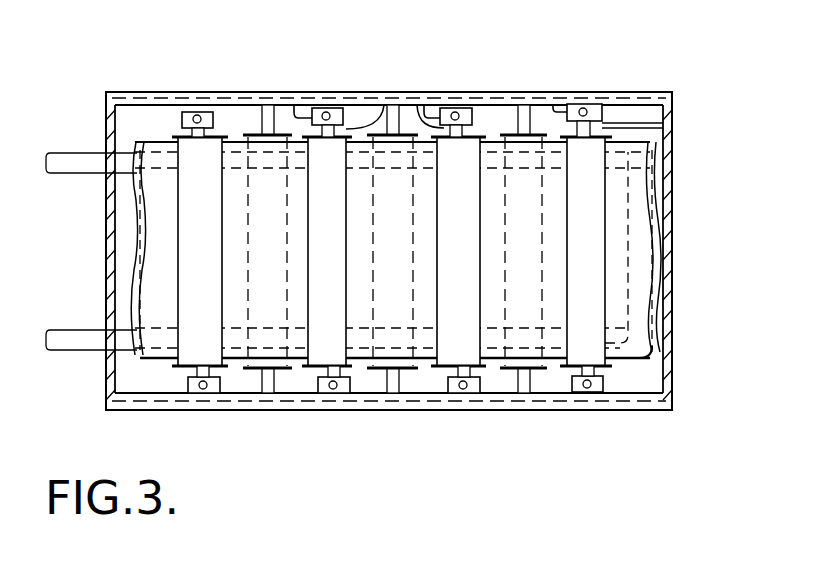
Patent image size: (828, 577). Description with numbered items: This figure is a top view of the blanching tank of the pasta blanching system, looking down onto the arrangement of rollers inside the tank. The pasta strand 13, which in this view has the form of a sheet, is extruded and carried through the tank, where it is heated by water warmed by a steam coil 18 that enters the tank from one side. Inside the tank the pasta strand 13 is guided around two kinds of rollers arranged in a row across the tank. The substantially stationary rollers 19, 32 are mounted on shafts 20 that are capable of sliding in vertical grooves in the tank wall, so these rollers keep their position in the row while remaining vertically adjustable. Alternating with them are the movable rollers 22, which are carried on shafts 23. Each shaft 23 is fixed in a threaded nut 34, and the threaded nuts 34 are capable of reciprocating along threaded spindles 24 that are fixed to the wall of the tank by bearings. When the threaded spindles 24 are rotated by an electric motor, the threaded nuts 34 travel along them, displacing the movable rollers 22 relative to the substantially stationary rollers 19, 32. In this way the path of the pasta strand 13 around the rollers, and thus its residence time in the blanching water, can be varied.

The pasta strand 13 is at (650, 341).
The steam coil 18 is at (84, 297).
The substantially stationary roller 19 is at (284, 343).
The shaft 20 is at (264, 120).
The movable roller 22 is at (322, 262).
The shaft 23 is at (185, 133).
The threaded spindle 24 is at (197, 115).
The substantially stationary roller 32 is at (405, 340).
The threaded nut 34 is at (180, 112).